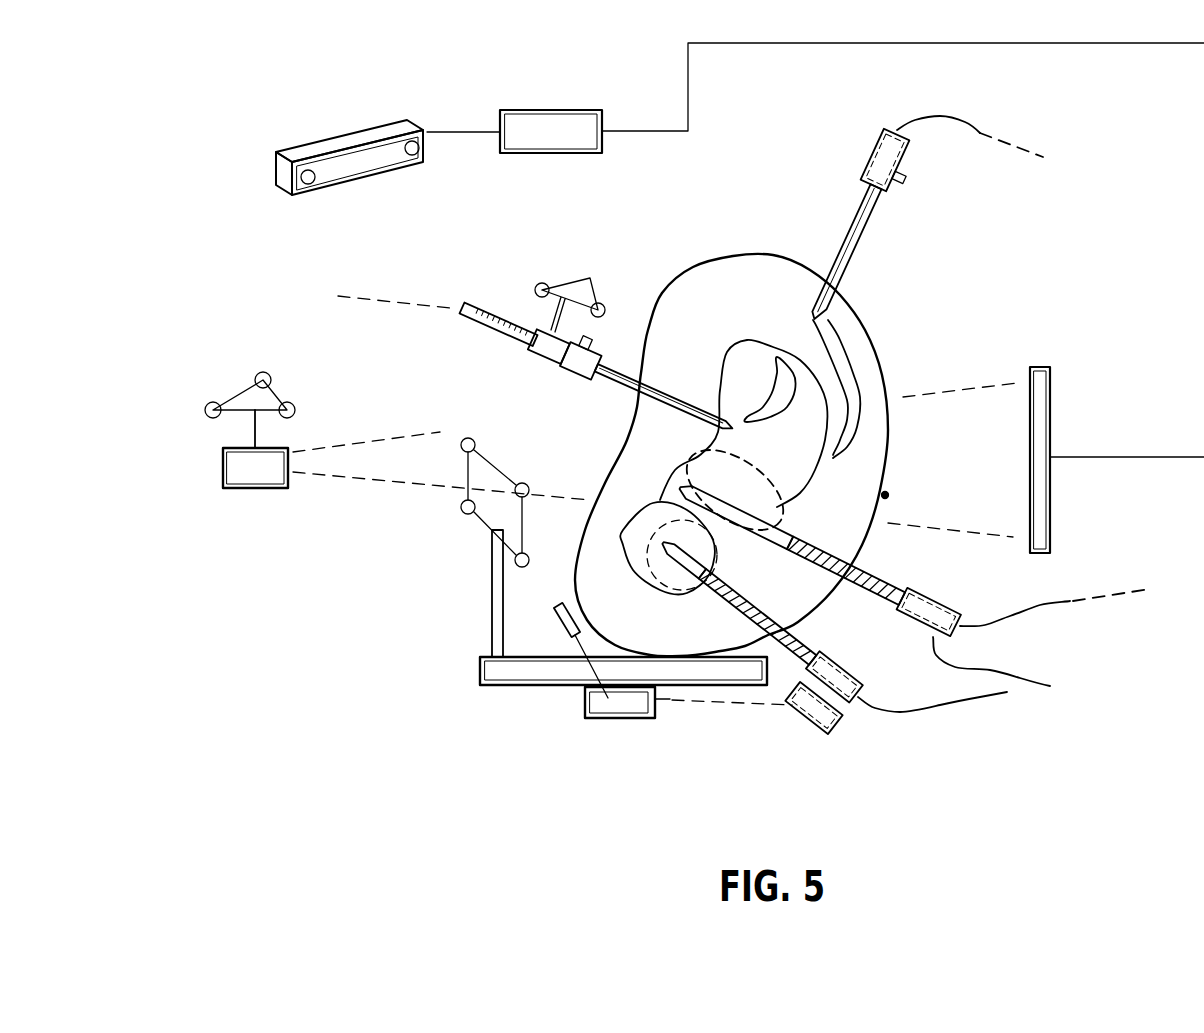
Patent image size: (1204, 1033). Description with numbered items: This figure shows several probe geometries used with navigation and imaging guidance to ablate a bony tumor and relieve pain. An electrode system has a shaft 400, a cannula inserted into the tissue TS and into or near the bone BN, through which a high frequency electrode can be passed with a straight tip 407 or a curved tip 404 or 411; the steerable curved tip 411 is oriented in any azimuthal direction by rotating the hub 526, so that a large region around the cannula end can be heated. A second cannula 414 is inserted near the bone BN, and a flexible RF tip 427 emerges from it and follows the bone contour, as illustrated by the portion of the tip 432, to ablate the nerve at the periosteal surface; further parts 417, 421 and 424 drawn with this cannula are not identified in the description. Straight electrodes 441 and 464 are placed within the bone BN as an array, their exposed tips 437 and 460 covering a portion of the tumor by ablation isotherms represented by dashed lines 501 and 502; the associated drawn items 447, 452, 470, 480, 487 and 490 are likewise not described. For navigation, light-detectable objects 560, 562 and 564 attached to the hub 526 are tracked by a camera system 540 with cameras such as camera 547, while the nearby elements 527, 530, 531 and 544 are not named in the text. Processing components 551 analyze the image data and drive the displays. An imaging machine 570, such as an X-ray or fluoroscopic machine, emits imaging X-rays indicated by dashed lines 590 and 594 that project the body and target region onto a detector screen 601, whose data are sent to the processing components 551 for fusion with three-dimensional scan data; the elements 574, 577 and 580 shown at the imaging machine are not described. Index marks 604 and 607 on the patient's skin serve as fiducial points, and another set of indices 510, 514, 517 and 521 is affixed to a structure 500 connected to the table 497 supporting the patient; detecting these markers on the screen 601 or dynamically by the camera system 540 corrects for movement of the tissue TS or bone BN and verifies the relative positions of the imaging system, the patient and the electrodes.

The shaft 400 is at (633, 455).
The curved tip 404 is at (746, 350).
The straight tip 407 is at (777, 355).
The bone BN is at (808, 338).
The curved or arced electrode tip 411 is at (640, 423).
The cannula 414 is at (862, 250).
The catheter handle 417 is at (873, 152).
The connector 421 is at (912, 183).
The cable 424 is at (973, 117).
The flexible RF tip 427 is at (855, 330).
The portion of the tip 432 is at (880, 430).
The tissue TS is at (888, 420).
The exposed tip 437 is at (840, 557).
The straight electrode 441 is at (892, 593).
The cable 447 is at (1011, 673).
The cable 452 is at (1140, 585).
The exposed tip 460 is at (668, 580).
The straight electrode 464 is at (800, 605).
The probe handle 470 is at (855, 700).
The drive unit 480 is at (603, 720).
The connector block 487 is at (813, 727).
The connection line 490 is at (723, 705).
The table 497 is at (508, 680).
The structure 500 is at (490, 608).
The ablation isotherm 501 is at (633, 455).
The ablation isotherm 502 is at (793, 503).
The index marker 510 is at (522, 567).
The index marker 514 is at (460, 507).
The index marker 517 is at (518, 481).
The index marker 521 is at (462, 440).
The hub 526 is at (535, 353).
The clamp 527 is at (558, 362).
The graduated probe holder 530 is at (470, 318).
The axis line 531 is at (445, 303).
The camera system 540 is at (276, 160).
The camera lens 544 is at (310, 183).
The camera 547 is at (412, 157).
The processing components 551 is at (537, 110).
The light-detectable object 560 is at (583, 272).
The light-detectable object 562 is at (603, 300).
The light-detectable object 564 is at (538, 283).
The imaging machine 570 is at (252, 488).
The marker 574 is at (210, 402).
The marker 577 is at (261, 373).
The marker 580 is at (290, 402).
The imaging X-rays 590 is at (345, 478).
The imaging X-rays 594 is at (352, 448).
The detector screen 601 is at (1050, 407).
The index mark 604 is at (885, 495).
The index mark 607 is at (880, 373).